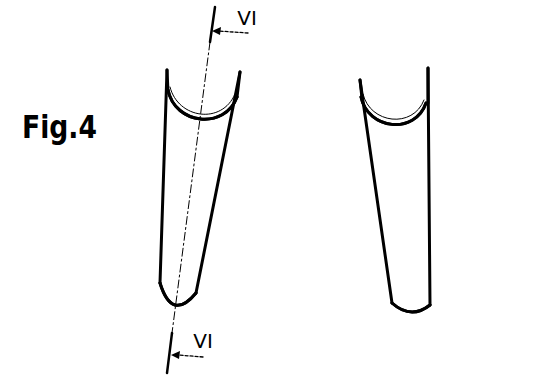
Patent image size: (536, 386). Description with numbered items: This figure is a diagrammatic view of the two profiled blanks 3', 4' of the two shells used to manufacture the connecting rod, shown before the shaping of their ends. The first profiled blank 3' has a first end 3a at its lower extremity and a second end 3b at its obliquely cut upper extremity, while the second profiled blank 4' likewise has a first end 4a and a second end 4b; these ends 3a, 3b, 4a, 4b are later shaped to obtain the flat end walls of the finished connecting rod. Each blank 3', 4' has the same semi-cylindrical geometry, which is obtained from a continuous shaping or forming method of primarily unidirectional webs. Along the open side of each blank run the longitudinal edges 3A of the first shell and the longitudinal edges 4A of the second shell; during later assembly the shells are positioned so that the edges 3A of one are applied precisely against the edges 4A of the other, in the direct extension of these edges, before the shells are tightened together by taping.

The profiled blank 3' is at (161, 187).
The longitudinal edges 3A is at (170, 84).
The end of shell 3a is at (171, 287).
The end of shell 3b is at (193, 106).
The profiled blank 4' is at (434, 190).
The longitudinal edges 4A is at (359, 80).
The end of shell 4a is at (403, 282).
The end of shell 4b is at (380, 118).